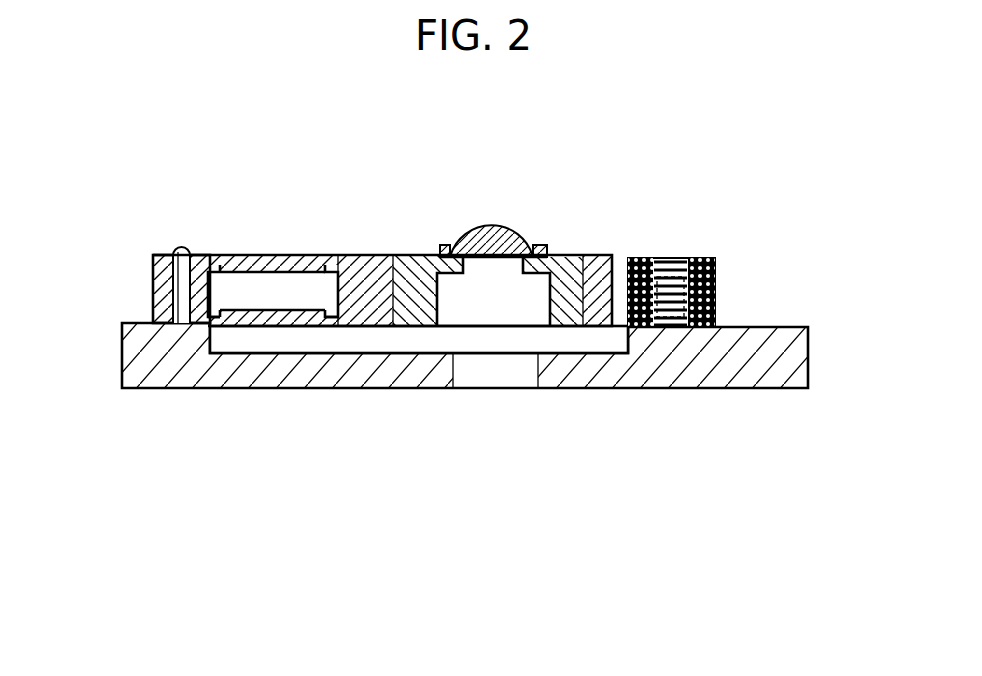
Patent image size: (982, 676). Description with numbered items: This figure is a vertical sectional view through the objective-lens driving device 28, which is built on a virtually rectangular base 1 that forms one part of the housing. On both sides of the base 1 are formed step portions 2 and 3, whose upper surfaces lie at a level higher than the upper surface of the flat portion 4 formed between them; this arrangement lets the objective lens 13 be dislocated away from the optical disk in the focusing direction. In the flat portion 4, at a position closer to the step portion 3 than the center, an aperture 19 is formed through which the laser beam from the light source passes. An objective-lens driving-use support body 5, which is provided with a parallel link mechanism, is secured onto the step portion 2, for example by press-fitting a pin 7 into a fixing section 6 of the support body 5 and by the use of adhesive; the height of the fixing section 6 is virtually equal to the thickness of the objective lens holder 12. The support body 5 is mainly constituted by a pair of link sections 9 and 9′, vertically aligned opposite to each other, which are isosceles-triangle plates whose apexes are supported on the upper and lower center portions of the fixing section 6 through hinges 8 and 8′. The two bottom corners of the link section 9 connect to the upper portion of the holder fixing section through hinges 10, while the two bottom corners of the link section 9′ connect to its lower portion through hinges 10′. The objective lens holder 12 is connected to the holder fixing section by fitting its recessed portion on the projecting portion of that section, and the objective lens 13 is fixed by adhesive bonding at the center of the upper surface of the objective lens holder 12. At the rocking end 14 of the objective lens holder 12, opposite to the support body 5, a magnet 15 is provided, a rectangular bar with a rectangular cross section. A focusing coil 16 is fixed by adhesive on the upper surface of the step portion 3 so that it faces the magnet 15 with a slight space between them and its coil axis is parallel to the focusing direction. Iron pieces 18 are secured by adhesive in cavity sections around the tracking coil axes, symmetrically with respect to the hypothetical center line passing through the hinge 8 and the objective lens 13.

The base 1 is at (640, 388).
The step portion 2 is at (143, 376).
The step portion 3 is at (745, 378).
The flat portion 4 is at (393, 345).
The objective-lens driving-use support body 5 is at (315, 256).
The fixing section 6 is at (153, 274).
The pin 7 is at (184, 246).
The hinge 8 is at (213, 263).
The link section 9 is at (272, 264).
The hinge 10 is at (334, 264).
The hinge 8′ is at (212, 328).
The link section 9′ is at (268, 328).
The hinge 10′ is at (333, 328).
The objective lens holder 12 is at (428, 256).
The objective lens 13 is at (513, 226).
The rocking end 14 is at (568, 257).
The magnet 15 is at (600, 257).
The focusing coil 16 is at (703, 257).
The iron piece 18 is at (668, 257).
The aperture 19 is at (462, 376).
The objective-lens driving device 28 is at (708, 195).